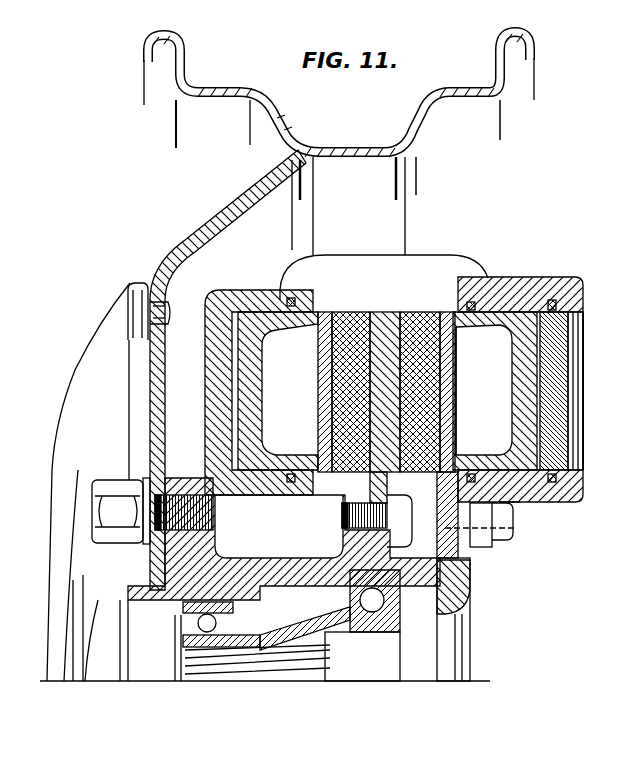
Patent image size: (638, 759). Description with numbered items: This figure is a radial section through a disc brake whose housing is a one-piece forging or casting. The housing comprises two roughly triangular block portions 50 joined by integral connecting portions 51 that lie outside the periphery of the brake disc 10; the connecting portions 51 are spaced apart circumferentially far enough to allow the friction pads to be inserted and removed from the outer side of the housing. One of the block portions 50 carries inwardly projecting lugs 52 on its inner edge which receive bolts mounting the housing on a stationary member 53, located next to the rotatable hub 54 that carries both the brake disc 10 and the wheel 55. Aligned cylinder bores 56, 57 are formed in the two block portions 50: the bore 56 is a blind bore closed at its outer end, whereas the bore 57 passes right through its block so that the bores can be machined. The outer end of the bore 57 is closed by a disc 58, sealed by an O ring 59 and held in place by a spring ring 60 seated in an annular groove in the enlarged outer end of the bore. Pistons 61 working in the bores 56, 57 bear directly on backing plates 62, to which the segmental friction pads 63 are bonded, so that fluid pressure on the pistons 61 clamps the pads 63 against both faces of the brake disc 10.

The brake disc 10 is at (377, 311).
The block portions 50 is at (225, 292).
The connecting portions 51 is at (437, 262).
The lugs 52 is at (514, 539).
The stationary member 53 is at (470, 556).
The hub 54 is at (268, 568).
The wheel 55 is at (168, 234).
The cylinder bore 56 is at (236, 378).
The cylinder bore 57 is at (537, 329).
The disc 58 is at (560, 367).
The O ring 59 is at (528, 513).
The spring ring 60 is at (584, 472).
The pistons 61 is at (252, 415).
The backing plates 62 is at (325, 312).
The friction pads 63 is at (352, 312).